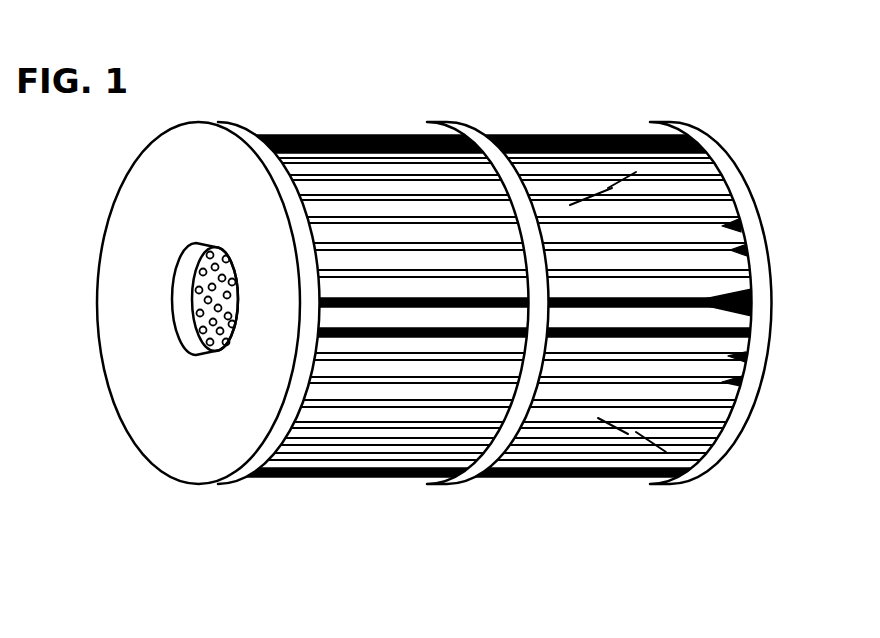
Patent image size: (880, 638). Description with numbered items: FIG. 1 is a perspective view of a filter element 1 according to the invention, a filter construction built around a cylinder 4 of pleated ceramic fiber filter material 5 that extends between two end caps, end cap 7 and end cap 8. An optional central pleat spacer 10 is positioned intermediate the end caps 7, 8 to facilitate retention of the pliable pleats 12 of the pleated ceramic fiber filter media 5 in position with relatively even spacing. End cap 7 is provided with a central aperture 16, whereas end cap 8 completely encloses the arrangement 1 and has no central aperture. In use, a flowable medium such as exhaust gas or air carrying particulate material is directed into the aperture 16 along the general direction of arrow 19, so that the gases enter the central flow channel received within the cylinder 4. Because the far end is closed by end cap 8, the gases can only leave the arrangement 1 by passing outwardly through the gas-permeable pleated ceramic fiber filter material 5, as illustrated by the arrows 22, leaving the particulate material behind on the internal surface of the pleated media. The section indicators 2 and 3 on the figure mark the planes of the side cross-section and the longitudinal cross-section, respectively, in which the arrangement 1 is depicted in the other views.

The filter element 1 is at (420, 296).
The section line 2- 2 is at (433, 118).
The section line 3- 3 is at (200, 163).
The cylinder 4 is at (336, 526).
The pleated ceramic fiber filter material 5 is at (346, 145).
The end cap 7 is at (113, 224).
The end cap 8 is at (753, 188).
The central pleat spacer 10 is at (488, 280).
The pleats 12 is at (298, 135).
The central aperture 16 is at (140, 278).
The arrow 19 is at (170, 300).
The arrows 22 is at (682, 143).